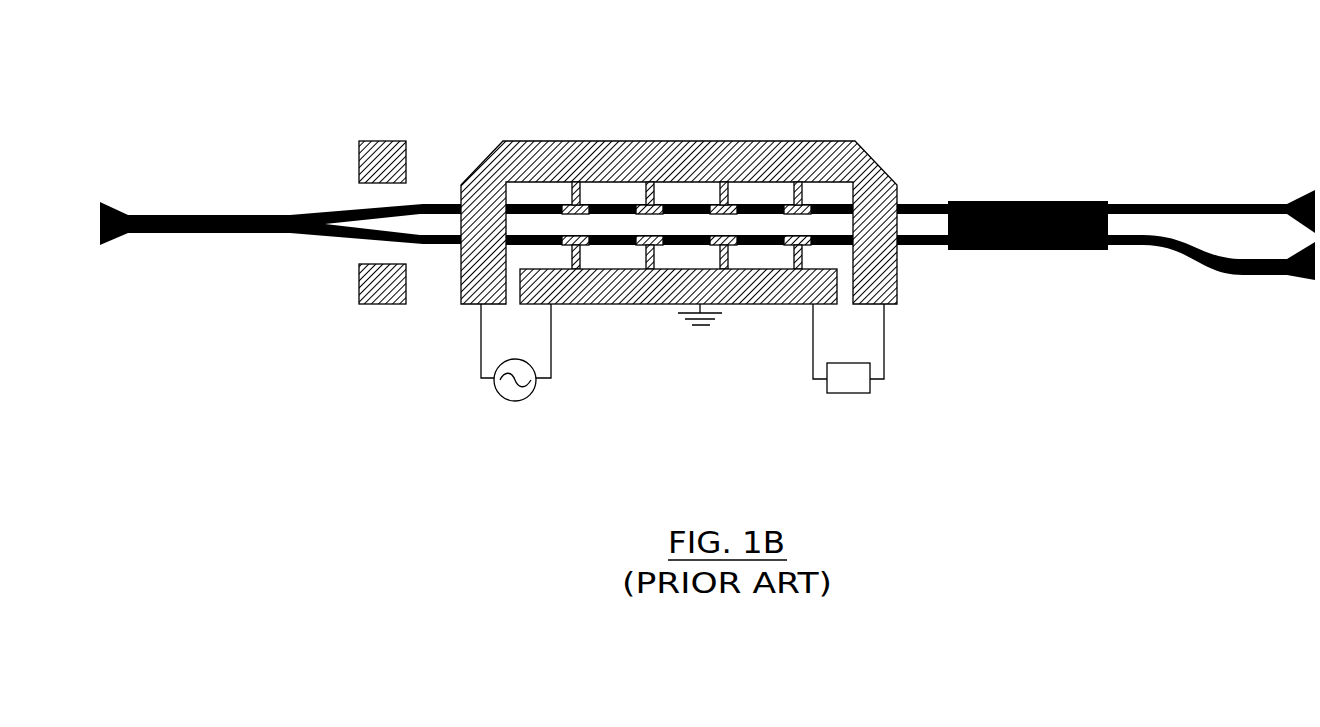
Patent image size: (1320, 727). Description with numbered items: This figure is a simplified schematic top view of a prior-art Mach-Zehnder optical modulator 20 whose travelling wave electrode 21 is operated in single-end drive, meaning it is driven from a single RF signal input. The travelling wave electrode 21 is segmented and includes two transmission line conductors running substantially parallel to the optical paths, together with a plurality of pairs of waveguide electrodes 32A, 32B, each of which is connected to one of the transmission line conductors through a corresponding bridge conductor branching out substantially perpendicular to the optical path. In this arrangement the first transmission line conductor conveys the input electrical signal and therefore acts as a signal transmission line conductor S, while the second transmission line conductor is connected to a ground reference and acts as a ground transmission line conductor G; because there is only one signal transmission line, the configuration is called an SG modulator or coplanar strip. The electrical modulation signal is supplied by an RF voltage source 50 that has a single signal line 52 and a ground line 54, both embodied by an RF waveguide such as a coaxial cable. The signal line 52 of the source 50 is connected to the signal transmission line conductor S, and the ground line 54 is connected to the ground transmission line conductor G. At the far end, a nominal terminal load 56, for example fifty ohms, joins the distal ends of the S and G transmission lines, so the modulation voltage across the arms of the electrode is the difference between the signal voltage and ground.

The modulator 20 is at (679, 191).
The travelling wave electrode 21 is at (707, 191).
The signal transmission line conductor S is at (714, 150).
The ground transmission line conductor G is at (635, 290).
The waveguide electrodes 32A is at (807, 205).
The waveguide electrodes 32B is at (788, 245).
The RF voltage source 50 is at (502, 387).
The signal line 52 is at (481, 343).
The ground line 54 is at (552, 357).
The nominal terminal load 56 is at (873, 387).